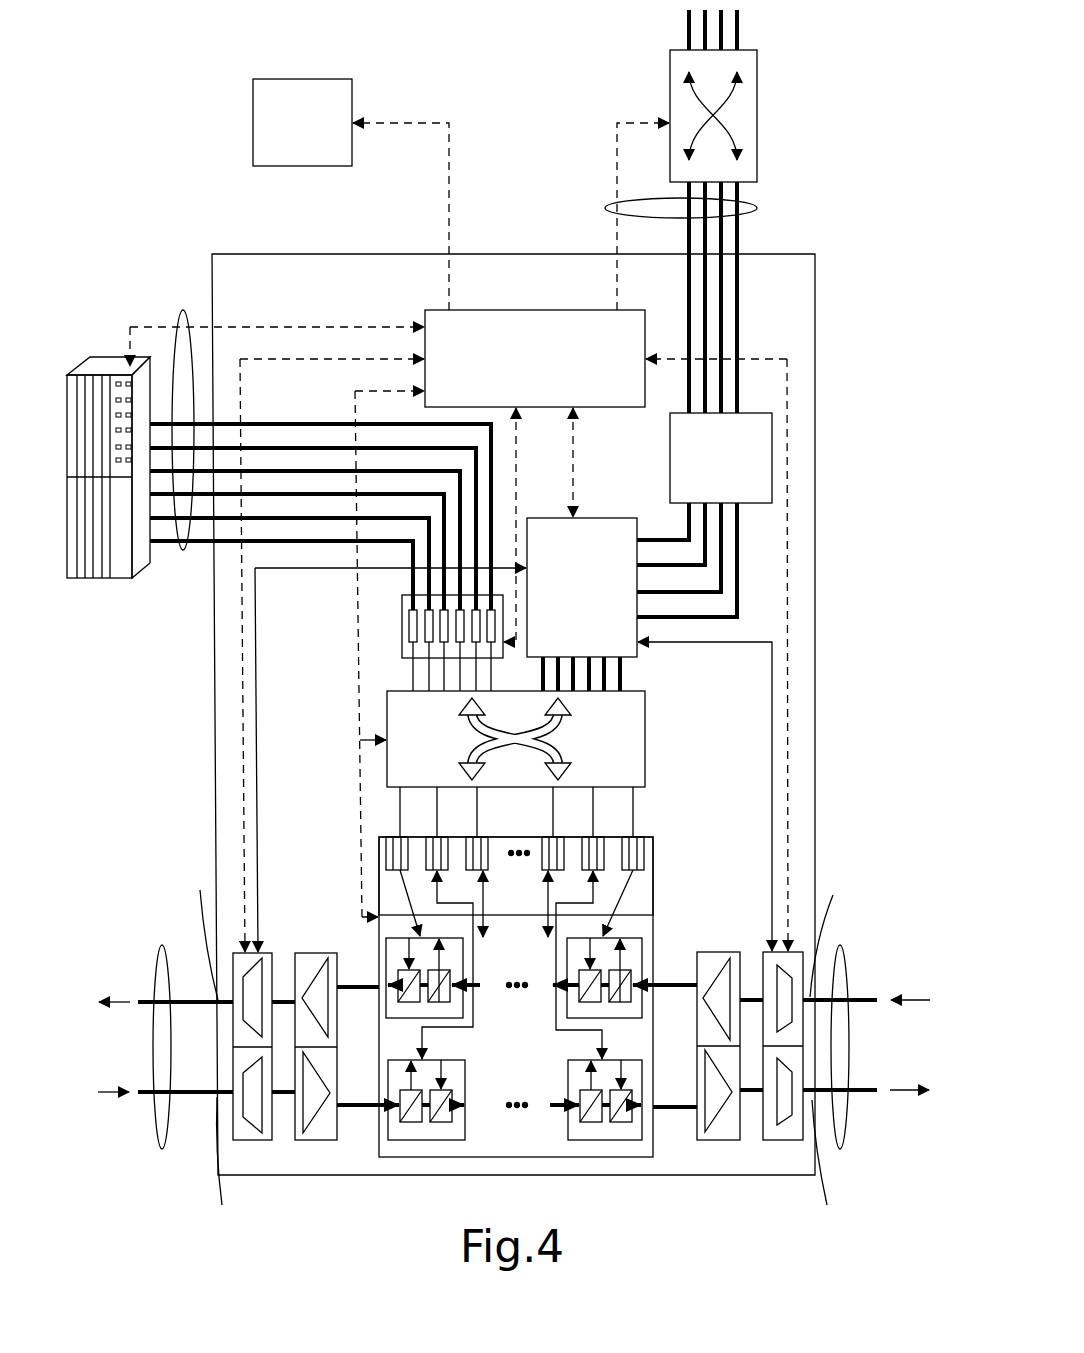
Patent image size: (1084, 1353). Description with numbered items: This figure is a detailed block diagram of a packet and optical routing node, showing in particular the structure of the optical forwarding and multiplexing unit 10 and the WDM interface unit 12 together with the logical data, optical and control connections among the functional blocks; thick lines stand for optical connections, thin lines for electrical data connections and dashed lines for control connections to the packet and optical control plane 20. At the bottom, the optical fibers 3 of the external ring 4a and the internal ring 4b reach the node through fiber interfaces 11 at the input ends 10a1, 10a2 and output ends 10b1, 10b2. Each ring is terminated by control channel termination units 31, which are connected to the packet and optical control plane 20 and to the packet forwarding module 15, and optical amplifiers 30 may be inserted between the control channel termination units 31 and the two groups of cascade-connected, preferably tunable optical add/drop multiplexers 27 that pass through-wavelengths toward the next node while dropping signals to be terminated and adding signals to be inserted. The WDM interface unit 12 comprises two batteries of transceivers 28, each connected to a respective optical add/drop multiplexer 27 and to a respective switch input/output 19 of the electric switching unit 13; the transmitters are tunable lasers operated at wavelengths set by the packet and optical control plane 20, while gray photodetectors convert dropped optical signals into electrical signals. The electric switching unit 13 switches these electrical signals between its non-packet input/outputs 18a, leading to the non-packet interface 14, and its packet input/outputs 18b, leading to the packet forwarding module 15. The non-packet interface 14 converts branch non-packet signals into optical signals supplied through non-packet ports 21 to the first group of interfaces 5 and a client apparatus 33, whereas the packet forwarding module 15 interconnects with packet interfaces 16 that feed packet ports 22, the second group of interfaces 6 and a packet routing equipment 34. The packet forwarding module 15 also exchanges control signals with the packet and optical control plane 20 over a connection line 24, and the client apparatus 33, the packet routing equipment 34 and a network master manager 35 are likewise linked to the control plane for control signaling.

The optical fibers 3 is at (160, 975).
The external ring 4a is at (140, 998).
The internal ring 4b is at (142, 1098).
The first group of interfaces 5 is at (178, 312).
The second group of interfaces 6 is at (757, 208).
The optical forwarding and multiplexing unit 10 is at (647, 1135).
The input end 10a1 is at (843, 933).
The input end 10a2 is at (215, 1165).
The output end 10b1 is at (189, 937).
The output end 10b2 is at (830, 1163).
The fiber interfaces 11 is at (170, 1152).
The WDM interface unit 12 is at (640, 907).
The electric switching unit 13 is at (645, 736).
The non-packet interface 14 is at (403, 607).
The packet forwarding module 15 is at (600, 530).
The packet interfaces 16 is at (672, 457).
The non-packet input/outputs 18a is at (460, 689).
The packet input/outputs 18b is at (558, 688).
The switch input/outputs 19 is at (478, 806).
The packet and optical control plane 20 is at (553, 318).
The non-packet ports 21 is at (240, 541).
The packet ports 22 is at (689, 256).
The connection line 24 is at (572, 490).
The optical add/drop multiplexers 27 is at (457, 1077).
The transceivers 28 is at (382, 855).
The optical amplifiers 30 is at (315, 955).
The control channel termination units 31 is at (272, 957).
The client apparatus 33 is at (110, 580).
The packet routing equipment 34 is at (748, 125).
The network master manager 35 is at (253, 132).